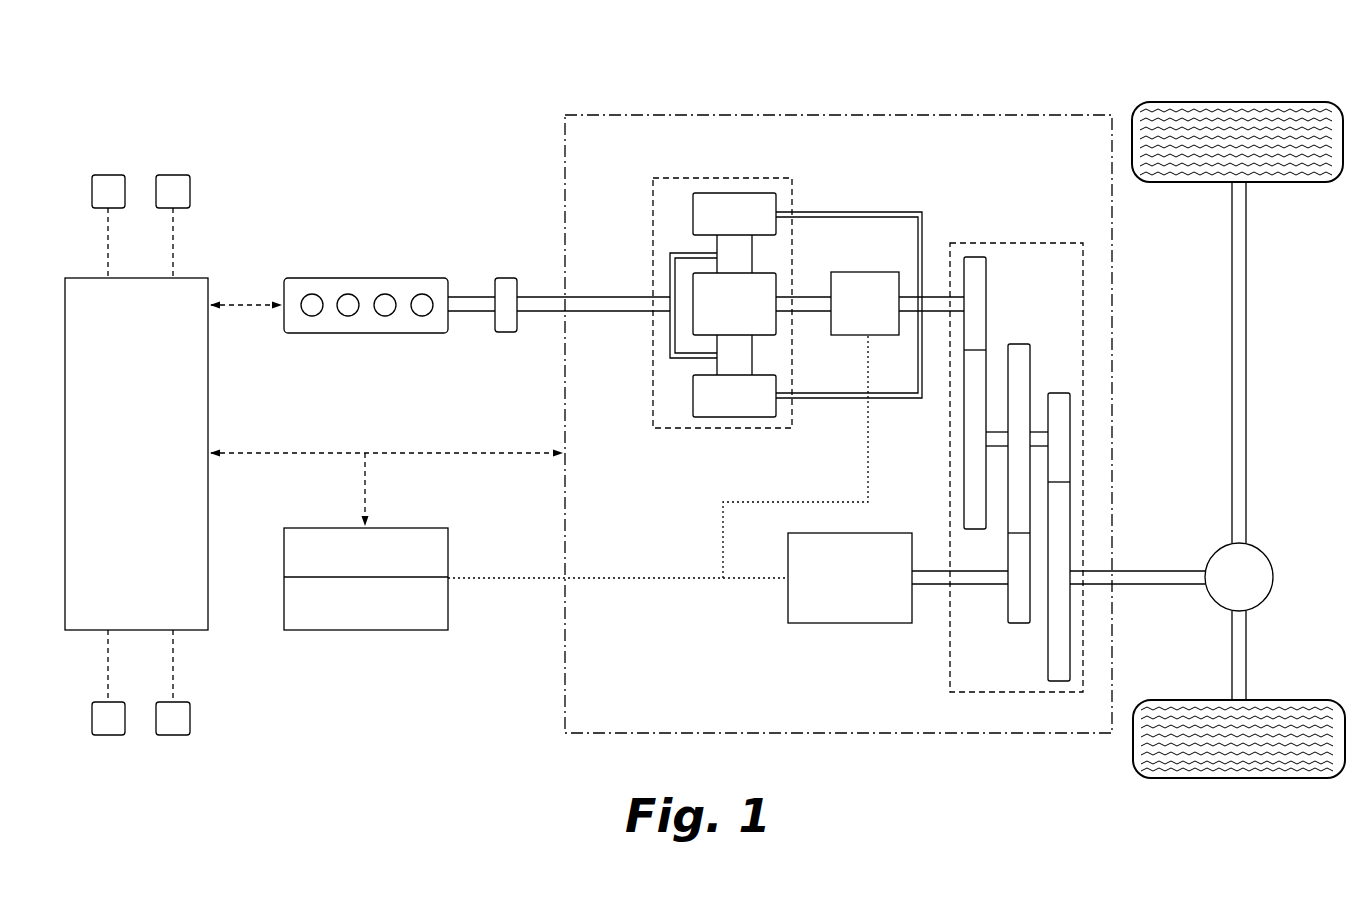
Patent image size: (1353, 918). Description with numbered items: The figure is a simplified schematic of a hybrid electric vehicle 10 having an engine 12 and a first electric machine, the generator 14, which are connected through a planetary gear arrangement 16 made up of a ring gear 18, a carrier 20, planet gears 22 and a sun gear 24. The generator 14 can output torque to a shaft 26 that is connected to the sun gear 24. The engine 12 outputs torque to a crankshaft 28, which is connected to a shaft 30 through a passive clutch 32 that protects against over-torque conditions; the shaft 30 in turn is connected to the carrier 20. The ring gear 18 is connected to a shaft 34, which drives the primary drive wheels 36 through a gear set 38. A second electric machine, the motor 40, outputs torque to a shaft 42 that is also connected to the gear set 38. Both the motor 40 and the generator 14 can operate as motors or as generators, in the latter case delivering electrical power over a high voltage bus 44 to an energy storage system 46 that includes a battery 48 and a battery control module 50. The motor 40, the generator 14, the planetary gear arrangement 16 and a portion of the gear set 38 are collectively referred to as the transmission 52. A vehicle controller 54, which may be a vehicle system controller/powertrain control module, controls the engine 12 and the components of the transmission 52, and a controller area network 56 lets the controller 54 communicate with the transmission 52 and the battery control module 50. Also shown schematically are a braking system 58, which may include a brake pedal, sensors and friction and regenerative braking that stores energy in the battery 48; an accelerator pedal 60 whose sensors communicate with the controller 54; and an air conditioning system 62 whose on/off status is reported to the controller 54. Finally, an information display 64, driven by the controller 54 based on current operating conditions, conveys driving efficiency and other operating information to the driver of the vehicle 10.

The vehicle 10 is at (1069, 61).
The engine 12 is at (330, 278).
The generator 14 is at (859, 272).
The planetary gear arrangement 16 is at (702, 285).
The ring gear 18 is at (693, 212).
The carrier 20 is at (670, 275).
The planet gears 22 is at (712, 248).
The sun gear 24 is at (777, 331).
The shaft 26 is at (807, 298).
The crankshaft 28 is at (480, 314).
The shaft 30 is at (545, 314).
The passive clutch 32 is at (507, 278).
The shaft 34 is at (943, 297).
The primary drive wheels 36 is at (1278, 187).
The gear set 38 is at (1026, 698).
The motor 40 is at (852, 624).
The shaft 42 is at (938, 568).
The high voltage bus 44 is at (660, 576).
The energy storage system 46 is at (353, 584).
The battery 48 is at (422, 528).
The battery control module 50 is at (422, 630).
The transmission 52 is at (559, 159).
The vehicle controller 54 is at (187, 277).
The controller area network 56 is at (305, 450).
The braking system 58 is at (107, 735).
The accelerator pedal 60 is at (172, 735).
The air conditioning system 62 is at (172, 173).
The information display 64 is at (107, 173).